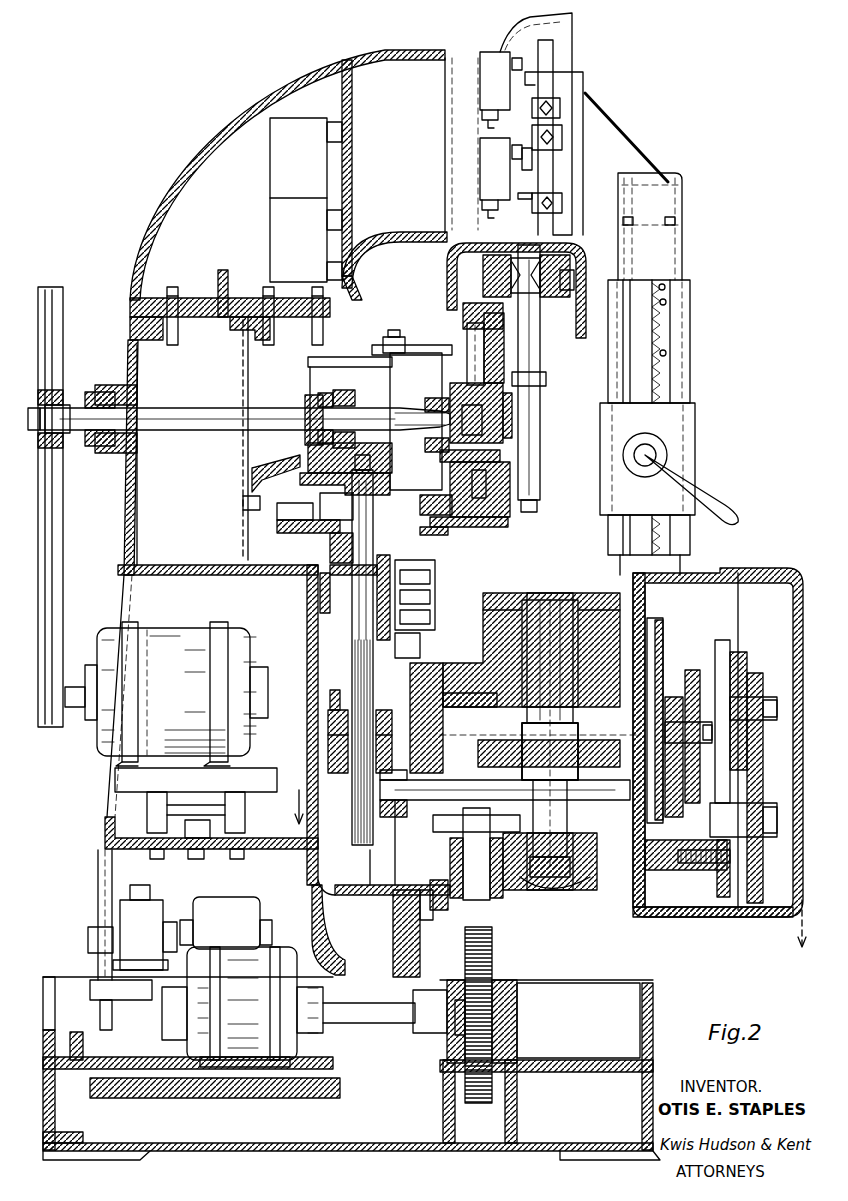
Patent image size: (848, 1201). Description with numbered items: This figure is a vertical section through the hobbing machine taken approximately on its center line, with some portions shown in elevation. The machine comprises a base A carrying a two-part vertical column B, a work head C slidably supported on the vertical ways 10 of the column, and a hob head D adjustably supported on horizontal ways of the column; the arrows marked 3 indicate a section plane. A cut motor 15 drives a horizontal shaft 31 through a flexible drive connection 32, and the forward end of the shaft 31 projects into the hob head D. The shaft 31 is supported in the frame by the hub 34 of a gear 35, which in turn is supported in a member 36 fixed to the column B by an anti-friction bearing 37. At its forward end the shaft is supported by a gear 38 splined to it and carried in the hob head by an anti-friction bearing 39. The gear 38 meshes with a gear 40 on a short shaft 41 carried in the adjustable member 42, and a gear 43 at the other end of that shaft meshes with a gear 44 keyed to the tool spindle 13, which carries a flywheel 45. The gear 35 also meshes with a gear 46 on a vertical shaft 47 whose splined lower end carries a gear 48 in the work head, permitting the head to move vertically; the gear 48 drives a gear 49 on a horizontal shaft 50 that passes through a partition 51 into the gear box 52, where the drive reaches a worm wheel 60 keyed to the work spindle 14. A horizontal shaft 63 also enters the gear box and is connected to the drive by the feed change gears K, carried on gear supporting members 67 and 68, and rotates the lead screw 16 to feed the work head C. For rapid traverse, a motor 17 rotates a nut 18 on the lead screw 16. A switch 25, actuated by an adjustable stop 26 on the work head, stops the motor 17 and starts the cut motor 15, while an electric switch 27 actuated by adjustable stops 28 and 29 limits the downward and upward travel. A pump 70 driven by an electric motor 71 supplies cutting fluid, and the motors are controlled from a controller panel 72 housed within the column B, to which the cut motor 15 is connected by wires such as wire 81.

The base A is at (650, 1012).
The vertical column B is at (168, 218).
The work head C is at (792, 590).
The hob head D is at (390, 330).
The feed change gears K is at (766, 682).
The section line 3 is at (544, 878).
The vertical ways 10 is at (422, 923).
The tool spindle 13 is at (548, 458).
The work spindle 14 is at (562, 712).
The cut motor 15 is at (186, 624).
The lead screw 16 is at (494, 953).
The rapid traverse motor 17 is at (265, 975).
The nut 18 is at (460, 980).
The switch 25 is at (486, 75).
The adjustable stop 26 is at (560, 110).
The electric switch 27 is at (490, 165).
The adjustable stop 28 is at (562, 140).
The adjustable stop 29 is at (555, 200).
The horizontal shaft 31 is at (198, 420).
The flexible drive connection 32 is at (58, 612).
The hub 34 is at (300, 452).
The gear 35 is at (344, 397).
The member 36 is at (255, 490).
The anti-friction bearing 37 is at (312, 395).
The gear 38 is at (455, 440).
The anti-friction bearing 39 is at (440, 400).
The gear 40 is at (466, 428).
The short shaft 41 is at (475, 340).
The adjustable member 42 is at (462, 262).
The gear 43 is at (466, 315).
The gear 44 is at (562, 318).
The flywheel 45 is at (578, 272).
The gear 46 is at (396, 446).
The vertical shaft 47 is at (356, 633).
The gear 48 is at (330, 778).
The gear 49 is at (390, 815).
The horizontal shaft 50 is at (462, 790).
The partition 51 is at (642, 606).
The gear box 52 is at (672, 905).
The worm wheel 60 is at (488, 740).
The horizontal shaft 63 is at (704, 832).
The gear supporting member 67 is at (662, 631).
The gear supporting member 68 is at (728, 642).
The pump 70 is at (128, 920).
The electric motor 71 is at (218, 897).
The controller panel 72 is at (275, 214).
The wire 81 is at (473, 854).